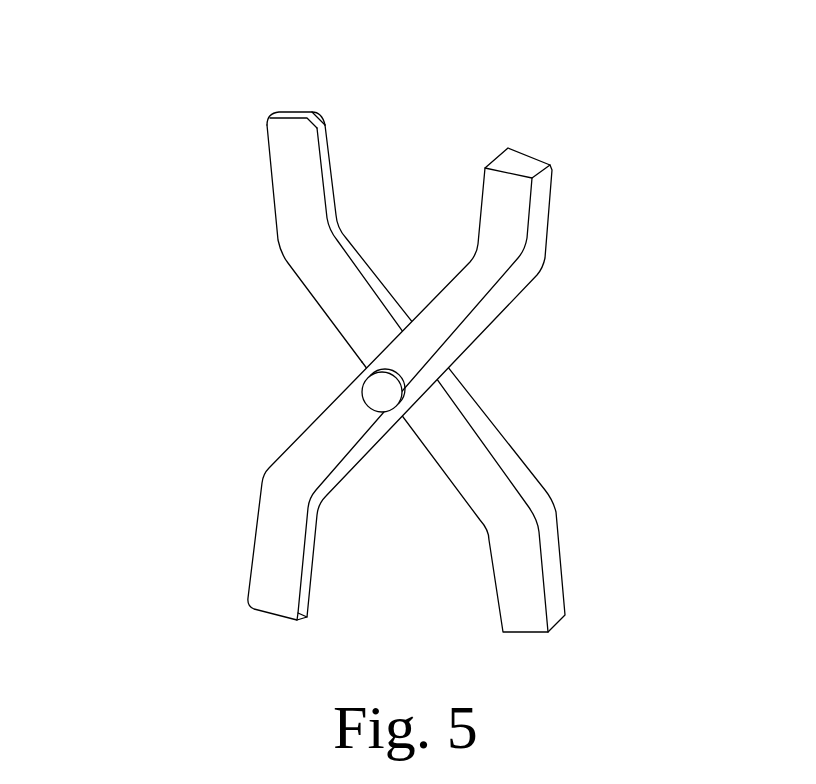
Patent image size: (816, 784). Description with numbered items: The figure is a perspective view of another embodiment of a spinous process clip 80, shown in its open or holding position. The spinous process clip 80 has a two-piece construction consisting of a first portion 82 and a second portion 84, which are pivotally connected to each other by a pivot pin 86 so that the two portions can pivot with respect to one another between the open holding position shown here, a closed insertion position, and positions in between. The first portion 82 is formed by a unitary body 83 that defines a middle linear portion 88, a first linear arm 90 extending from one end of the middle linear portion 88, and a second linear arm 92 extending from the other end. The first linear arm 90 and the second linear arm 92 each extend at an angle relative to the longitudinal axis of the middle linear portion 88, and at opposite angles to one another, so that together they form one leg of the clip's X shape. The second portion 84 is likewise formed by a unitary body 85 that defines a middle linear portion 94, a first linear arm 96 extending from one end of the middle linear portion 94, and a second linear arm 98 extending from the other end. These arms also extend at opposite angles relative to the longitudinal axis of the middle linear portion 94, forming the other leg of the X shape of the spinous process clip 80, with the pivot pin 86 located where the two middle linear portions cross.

The spinous process clip 80 is at (372, 324).
The first portion 82 is at (461, 359).
The second portion 84 is at (354, 347).
The unitary body 83 is at (495, 323).
The unitary body 85 is at (292, 282).
The pivot pin 86 is at (378, 388).
The middle linear portion 88 is at (402, 352).
The middle linear portion 94 is at (443, 437).
The first linear arm 90 is at (507, 177).
The second linear arm 92 is at (267, 583).
The first linear arm 96 is at (292, 125).
The second linear arm 98 is at (540, 610).